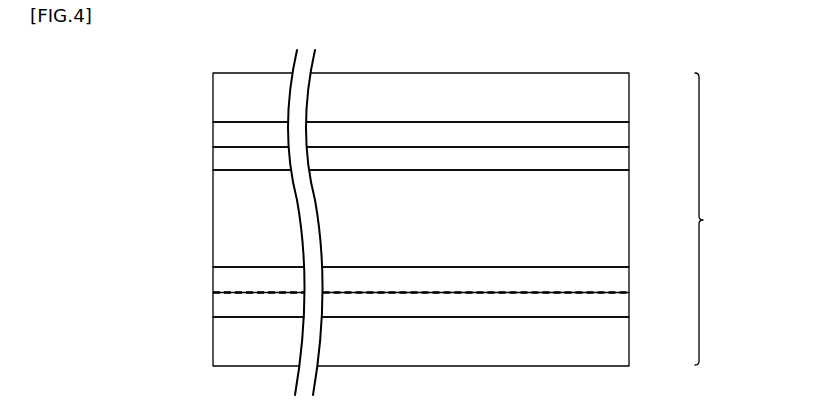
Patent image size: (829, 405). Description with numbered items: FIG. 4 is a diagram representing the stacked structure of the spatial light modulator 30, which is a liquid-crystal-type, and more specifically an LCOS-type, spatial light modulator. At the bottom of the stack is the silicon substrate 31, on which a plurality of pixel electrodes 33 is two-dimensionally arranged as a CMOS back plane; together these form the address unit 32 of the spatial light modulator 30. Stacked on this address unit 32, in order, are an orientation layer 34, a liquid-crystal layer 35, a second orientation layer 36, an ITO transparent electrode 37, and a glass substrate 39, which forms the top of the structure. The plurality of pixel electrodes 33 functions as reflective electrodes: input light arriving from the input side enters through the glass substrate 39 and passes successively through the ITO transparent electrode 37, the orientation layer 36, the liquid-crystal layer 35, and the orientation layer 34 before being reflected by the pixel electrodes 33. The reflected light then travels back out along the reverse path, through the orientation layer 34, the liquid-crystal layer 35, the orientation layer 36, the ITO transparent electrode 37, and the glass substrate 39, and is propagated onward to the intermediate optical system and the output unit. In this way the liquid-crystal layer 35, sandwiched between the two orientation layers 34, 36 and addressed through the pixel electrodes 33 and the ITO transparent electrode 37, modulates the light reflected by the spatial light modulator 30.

The spatial light modulator 30 is at (715, 219).
The silicon substrate 31 is at (629, 355).
The address unit 32 is at (629, 307).
The pixel electrodes 33 is at (629, 298).
The orientation layer 34 is at (629, 277).
The liquid-crystal layer 35 is at (629, 207).
The orientation layer 36 is at (629, 168).
The ITO transparent electrode 37 is at (629, 137).
The glass substrate 39 is at (629, 98).